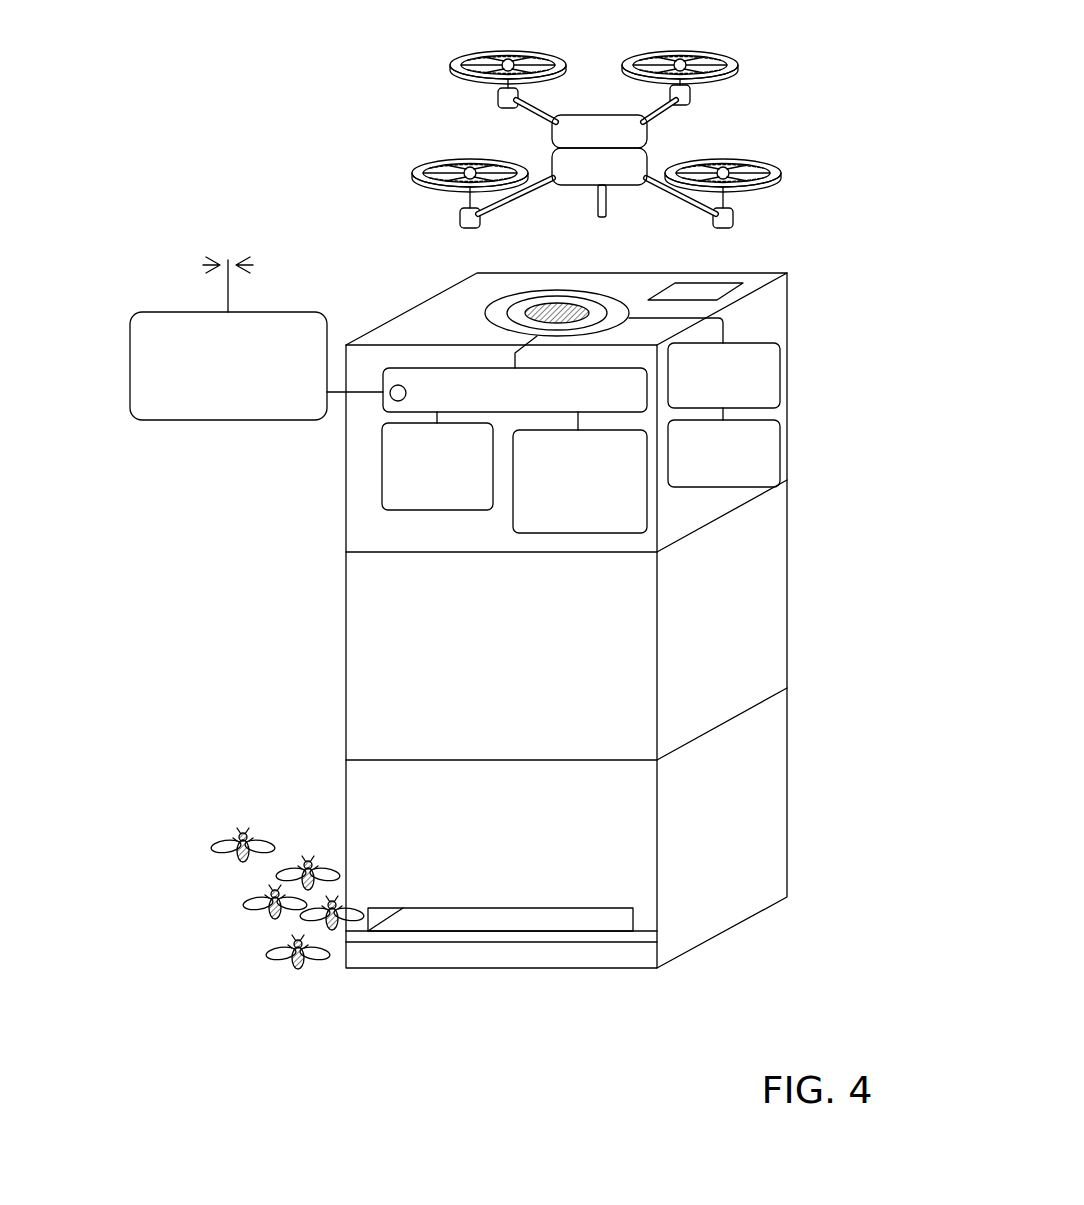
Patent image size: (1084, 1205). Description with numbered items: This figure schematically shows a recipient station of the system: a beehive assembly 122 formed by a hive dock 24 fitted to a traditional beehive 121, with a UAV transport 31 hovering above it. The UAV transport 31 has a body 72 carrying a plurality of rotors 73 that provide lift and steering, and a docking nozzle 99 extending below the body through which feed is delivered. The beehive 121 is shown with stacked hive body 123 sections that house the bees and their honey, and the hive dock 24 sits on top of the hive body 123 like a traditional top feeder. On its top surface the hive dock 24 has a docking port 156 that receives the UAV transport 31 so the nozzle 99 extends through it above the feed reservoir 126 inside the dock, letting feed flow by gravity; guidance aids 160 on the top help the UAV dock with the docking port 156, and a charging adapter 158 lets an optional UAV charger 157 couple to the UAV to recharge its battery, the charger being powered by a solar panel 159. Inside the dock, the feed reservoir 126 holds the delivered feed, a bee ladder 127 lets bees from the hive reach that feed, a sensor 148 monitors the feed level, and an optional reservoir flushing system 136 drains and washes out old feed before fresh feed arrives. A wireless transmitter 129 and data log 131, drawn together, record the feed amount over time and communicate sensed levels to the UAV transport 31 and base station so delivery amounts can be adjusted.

The UAV transport 31 is at (629, 129).
The rotors 73 is at (457, 63).
The body 72 is at (650, 143).
The nozzle 99 is at (610, 208).
The beehive assembly 122 is at (501, 573).
The hive dock 24 is at (472, 393).
The docking port 156 is at (540, 290).
The charging adapter 158 is at (510, 273).
The guidance aids 160 is at (730, 275).
The feed reservoir 126 is at (430, 368).
The sensor 148 is at (392, 399).
The bee ladder 127 is at (382, 475).
The reservoir flushing system 136 is at (623, 533).
The UAV charger 157 is at (781, 392).
The solar panel 159 is at (781, 440).
The wireless transmitter 129 is at (210, 338).
The data log 131 is at (130, 387).
The beehive 121 is at (625, 700).
The hive body 123 is at (787, 640).